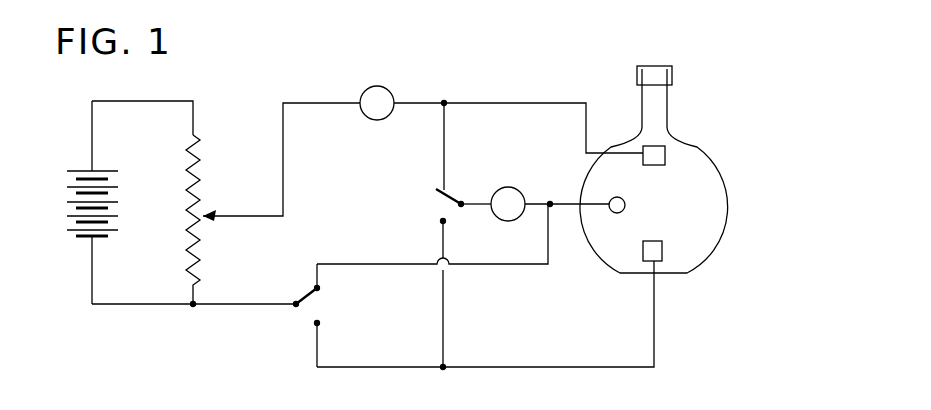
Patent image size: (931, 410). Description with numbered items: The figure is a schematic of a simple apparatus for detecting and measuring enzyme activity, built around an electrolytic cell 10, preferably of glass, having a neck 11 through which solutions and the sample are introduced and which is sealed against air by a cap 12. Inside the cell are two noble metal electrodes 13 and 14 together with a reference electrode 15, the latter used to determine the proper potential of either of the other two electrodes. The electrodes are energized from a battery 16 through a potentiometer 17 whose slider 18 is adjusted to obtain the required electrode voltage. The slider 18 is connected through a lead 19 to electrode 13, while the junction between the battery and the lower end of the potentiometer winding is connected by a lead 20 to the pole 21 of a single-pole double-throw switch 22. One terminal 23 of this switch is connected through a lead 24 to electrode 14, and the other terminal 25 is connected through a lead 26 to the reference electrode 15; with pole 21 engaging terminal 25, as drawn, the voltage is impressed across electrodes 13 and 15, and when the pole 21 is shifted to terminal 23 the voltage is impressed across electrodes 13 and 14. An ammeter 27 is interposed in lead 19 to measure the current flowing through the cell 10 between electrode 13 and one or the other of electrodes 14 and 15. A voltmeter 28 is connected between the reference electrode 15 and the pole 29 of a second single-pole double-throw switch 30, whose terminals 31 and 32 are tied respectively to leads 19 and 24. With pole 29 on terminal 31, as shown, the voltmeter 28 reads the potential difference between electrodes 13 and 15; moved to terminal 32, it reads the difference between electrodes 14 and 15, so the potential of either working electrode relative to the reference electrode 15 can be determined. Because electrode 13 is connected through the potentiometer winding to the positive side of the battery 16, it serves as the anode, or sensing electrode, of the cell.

The cell 10 is at (689, 171).
The neck 11 is at (658, 110).
The cap 12 is at (672, 68).
The noble metal electrode 13 is at (665, 158).
The noble metal electrode 14 is at (662, 252).
The reference electrode 15 is at (614, 213).
The battery 16 is at (92, 241).
The potentiometer 17 is at (210, 250).
The slider 18 is at (213, 211).
The lead 19 is at (480, 103).
The lead 20 is at (222, 305).
The pole 21 is at (305, 293).
The single-pole double-throw switch 22 is at (300, 323).
The terminal 23 is at (320, 323).
The lead 24 is at (530, 368).
The terminal 25 is at (319, 287).
The lead 26 is at (540, 265).
The ammeter 27 is at (388, 90).
The voltmeter 28 is at (513, 219).
The pole 29 is at (453, 194).
The single-pole double-throw switch 30 is at (437, 203).
The terminal 31 is at (433, 183).
The terminal 32 is at (440, 223).